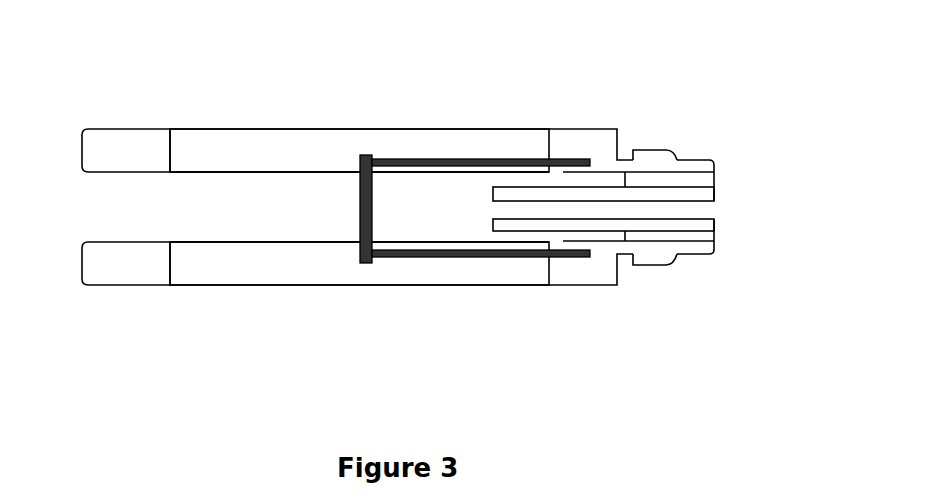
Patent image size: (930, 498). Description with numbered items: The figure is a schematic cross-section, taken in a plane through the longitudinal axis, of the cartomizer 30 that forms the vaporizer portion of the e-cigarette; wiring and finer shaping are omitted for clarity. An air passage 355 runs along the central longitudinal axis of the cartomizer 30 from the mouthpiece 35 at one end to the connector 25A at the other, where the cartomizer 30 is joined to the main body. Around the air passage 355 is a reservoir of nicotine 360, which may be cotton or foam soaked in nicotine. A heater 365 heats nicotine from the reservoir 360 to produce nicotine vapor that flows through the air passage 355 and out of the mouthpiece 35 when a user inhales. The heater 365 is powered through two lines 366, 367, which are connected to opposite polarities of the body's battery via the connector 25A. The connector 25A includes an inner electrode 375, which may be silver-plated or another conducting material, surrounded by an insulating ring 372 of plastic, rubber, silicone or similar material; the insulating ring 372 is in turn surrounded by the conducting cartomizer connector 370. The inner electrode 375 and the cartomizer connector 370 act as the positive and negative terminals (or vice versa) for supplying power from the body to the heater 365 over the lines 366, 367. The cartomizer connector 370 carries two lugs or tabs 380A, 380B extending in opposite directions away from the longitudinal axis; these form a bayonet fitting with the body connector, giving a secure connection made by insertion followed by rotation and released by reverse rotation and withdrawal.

The cartomizer 30 is at (250, 298).
The mouthpiece 35 is at (92, 302).
The air passage 355 is at (218, 207).
The reservoir of nicotine 360 is at (268, 152).
The heater 365 is at (357, 190).
The power line 366 is at (480, 153).
The power line 367 is at (447, 258).
The cartomizer connector 370 is at (683, 166).
The insulating ring 372 is at (697, 182).
The inner electrode 375 is at (674, 225).
The lug or tab 380A is at (652, 158).
The lug or tab 380B is at (652, 255).
The connector 25A is at (707, 265).